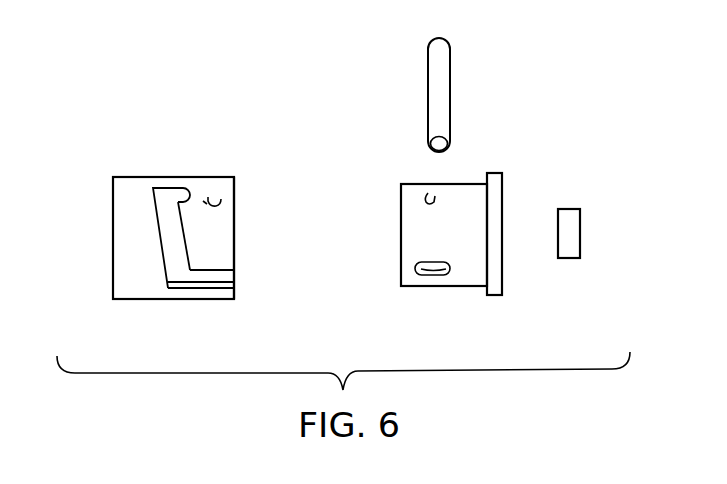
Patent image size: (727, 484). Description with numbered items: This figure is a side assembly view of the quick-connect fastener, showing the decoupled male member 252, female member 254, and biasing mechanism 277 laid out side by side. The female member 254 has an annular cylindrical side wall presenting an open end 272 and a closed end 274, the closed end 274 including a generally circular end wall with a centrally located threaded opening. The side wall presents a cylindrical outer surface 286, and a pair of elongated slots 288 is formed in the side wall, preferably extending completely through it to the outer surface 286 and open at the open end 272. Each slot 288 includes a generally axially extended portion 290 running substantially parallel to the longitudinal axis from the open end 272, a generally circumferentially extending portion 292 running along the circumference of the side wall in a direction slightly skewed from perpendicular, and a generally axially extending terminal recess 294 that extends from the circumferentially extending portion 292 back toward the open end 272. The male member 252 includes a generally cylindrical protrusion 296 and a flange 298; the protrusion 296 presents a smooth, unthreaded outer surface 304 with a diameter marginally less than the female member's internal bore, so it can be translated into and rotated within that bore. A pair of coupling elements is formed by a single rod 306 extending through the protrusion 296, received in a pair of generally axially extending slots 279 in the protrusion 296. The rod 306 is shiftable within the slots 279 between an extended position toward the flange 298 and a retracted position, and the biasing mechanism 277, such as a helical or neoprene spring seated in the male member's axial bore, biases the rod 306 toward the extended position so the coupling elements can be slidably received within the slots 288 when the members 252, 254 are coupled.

The male member 252 is at (466, 178).
The female member 254 is at (157, 178).
The open end 272 is at (235, 235).
The closed end 274 is at (113, 193).
The biasing mechanism 277 is at (580, 230).
The axially extending slots 279 is at (430, 272).
The outer surface 286 is at (208, 197).
The elongated slots 288 is at (222, 273).
The generally axially extended portion 290 is at (198, 277).
The generally circumferentially extending portion 292 is at (173, 248).
The terminal recess 294 is at (181, 193).
The protrusion 296 is at (473, 275).
The flange 298 is at (497, 293).
The outer surface 304 is at (428, 193).
The rod 306 is at (427, 85).